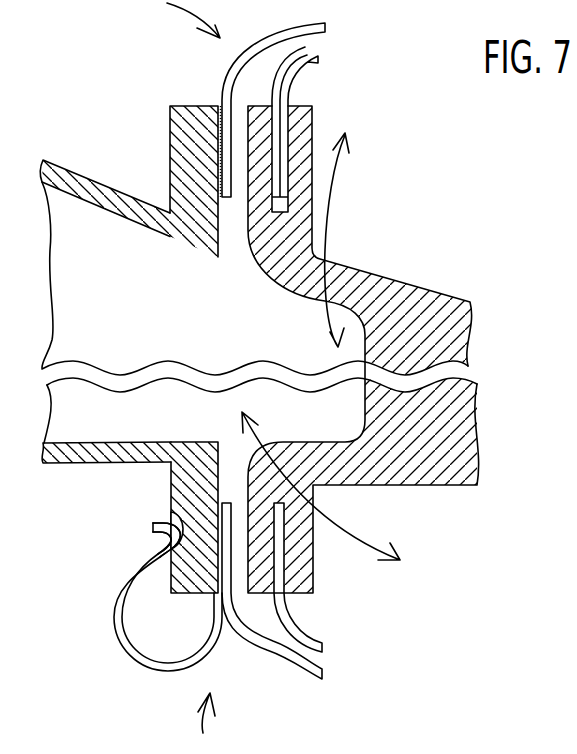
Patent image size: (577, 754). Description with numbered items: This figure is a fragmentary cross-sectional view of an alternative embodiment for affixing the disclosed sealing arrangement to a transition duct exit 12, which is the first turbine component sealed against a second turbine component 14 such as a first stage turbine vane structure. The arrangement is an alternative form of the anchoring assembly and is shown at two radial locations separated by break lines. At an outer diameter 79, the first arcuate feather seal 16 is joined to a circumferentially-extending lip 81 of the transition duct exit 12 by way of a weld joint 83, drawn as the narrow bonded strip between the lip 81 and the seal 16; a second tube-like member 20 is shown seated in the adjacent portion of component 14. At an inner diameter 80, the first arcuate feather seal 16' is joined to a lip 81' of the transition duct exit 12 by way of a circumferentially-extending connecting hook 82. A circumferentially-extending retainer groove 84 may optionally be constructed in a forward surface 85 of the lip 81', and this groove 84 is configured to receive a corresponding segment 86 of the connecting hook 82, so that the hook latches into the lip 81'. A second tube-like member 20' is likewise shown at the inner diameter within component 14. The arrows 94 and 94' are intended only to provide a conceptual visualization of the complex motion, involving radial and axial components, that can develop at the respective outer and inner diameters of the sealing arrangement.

The outer diameter 79 is at (180, 19).
The first arcuate feather seal 16 is at (244, 110).
The second tube 20 is at (316, 129).
The weld joint 83 is at (220, 137).
The circumferentially-extending lip 81 is at (161, 181).
The first turbine component 12 is at (110, 207).
The second turbine component 14 is at (422, 300).
The arrow 94 is at (364, 240).
The lip 81' is at (179, 498).
The circumferentially-extending retainer groove 84 is at (182, 525).
The segment of connecting hook 86 is at (167, 541).
The forward surface 85 is at (170, 580).
The circumferentially-extending connecting hook 82 is at (170, 670).
The first arcuate feather seal 16' is at (272, 605).
The second tube lower end 20' is at (313, 577).
The arrow 94' is at (324, 486).
The inner diameter 80 is at (203, 733).